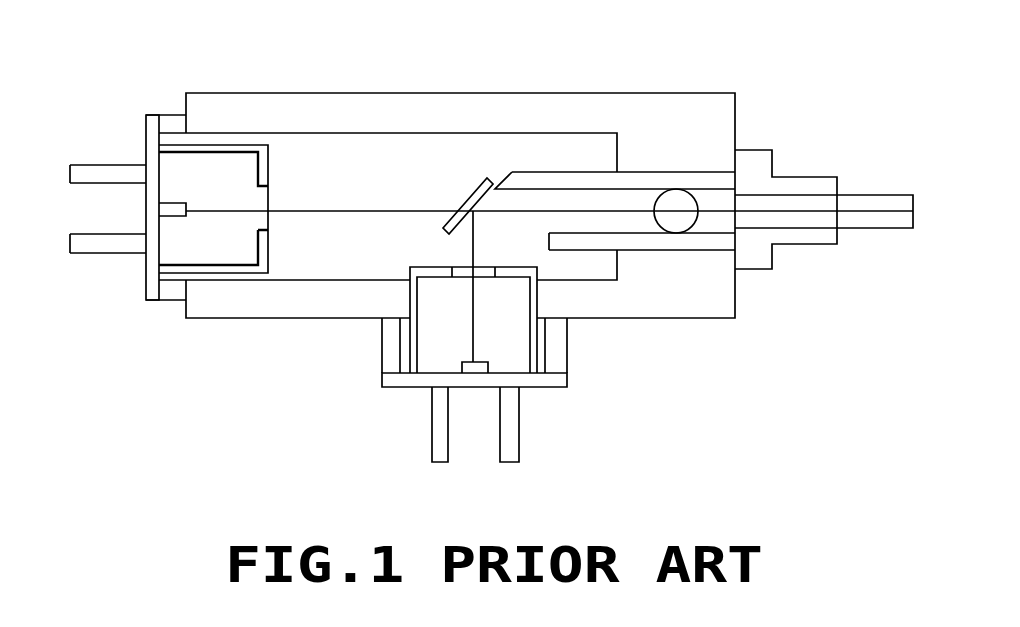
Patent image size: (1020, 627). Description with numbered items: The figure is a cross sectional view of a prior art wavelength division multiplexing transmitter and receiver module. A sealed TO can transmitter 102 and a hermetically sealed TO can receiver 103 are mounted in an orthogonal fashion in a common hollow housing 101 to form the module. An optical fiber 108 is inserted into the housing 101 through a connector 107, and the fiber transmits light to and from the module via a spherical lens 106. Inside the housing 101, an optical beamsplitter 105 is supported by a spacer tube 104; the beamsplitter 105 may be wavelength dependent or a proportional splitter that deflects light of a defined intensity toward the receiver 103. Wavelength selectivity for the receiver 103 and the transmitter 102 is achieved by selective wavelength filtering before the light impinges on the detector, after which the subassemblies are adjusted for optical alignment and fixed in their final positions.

The common hollow housing 101 is at (355, 113).
The sealed TO can transmitter 102 is at (223, 185).
The hermetically sealed TO can receiver 103 is at (448, 327).
The spacer tube 104 is at (643, 183).
The optical beamsplitter 105 is at (473, 185).
The spherical lens 106 is at (672, 220).
The connector 107 is at (788, 239).
The optical fiber 108 is at (798, 203).